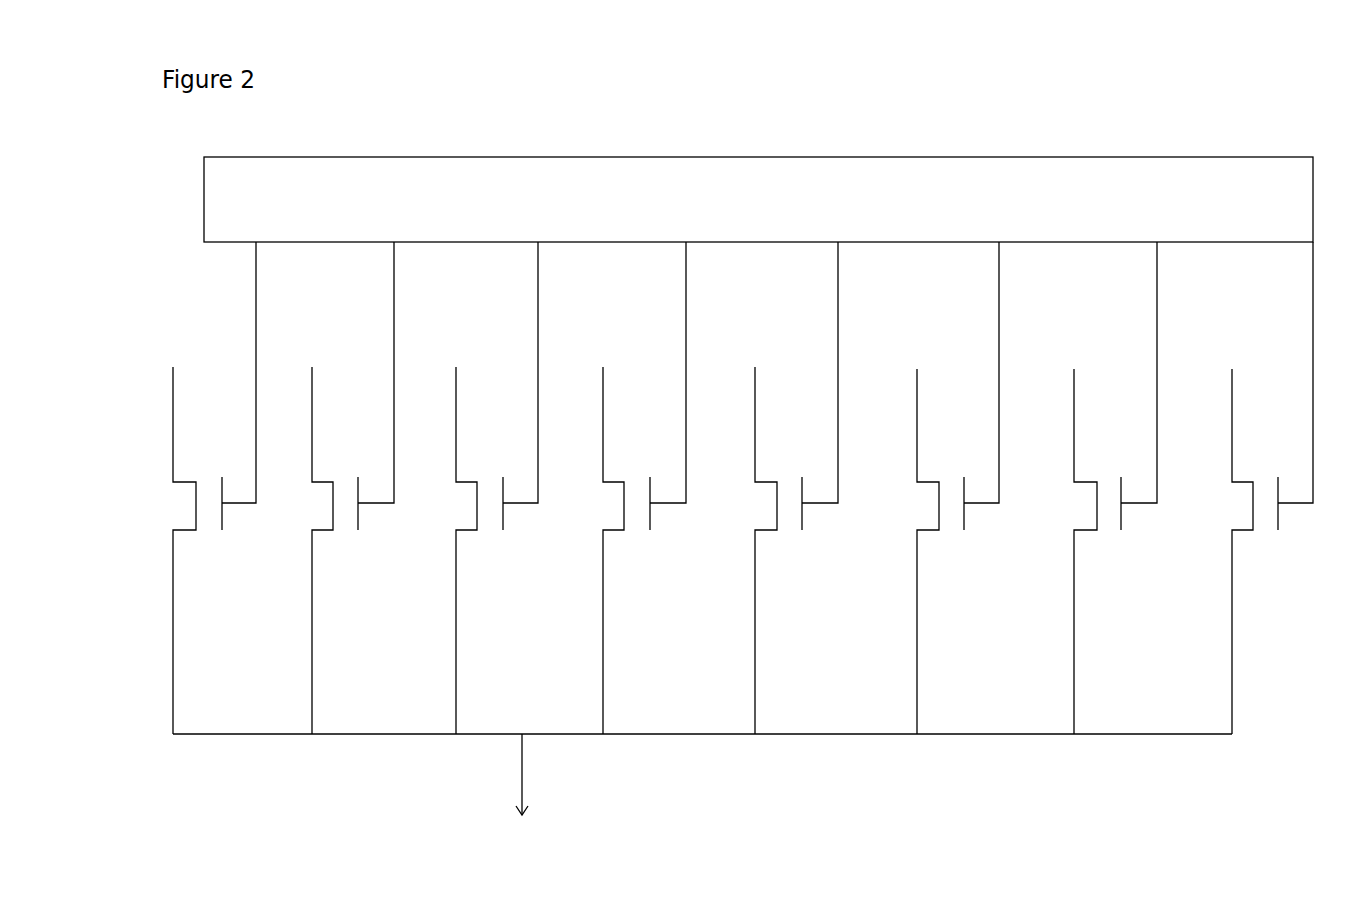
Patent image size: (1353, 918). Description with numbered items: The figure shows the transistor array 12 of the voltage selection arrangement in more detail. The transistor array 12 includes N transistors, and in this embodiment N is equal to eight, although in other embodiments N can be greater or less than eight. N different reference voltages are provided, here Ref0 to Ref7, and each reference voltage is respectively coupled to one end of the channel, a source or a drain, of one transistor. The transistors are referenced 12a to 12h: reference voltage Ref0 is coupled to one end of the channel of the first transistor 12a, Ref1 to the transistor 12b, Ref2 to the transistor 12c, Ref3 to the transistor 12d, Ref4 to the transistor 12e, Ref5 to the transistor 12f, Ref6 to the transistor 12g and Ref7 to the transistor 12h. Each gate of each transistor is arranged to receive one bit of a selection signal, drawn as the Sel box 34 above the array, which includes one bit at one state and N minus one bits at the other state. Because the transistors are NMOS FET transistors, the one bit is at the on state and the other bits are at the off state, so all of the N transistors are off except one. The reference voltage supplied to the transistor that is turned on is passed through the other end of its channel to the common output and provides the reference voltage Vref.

The transistor array 12 is at (173, 273).
The first transistor 12a is at (222, 530).
The transistor 12b is at (358, 530).
The transistor 12c is at (503, 530).
The transistor 12d is at (650, 530).
The transistor 12e is at (802, 530).
The transistor 12f is at (964, 530).
The transistor 12g is at (1121, 530).
The transistor 12h is at (1278, 530).
The select signal bus Sel 7:0 34 is at (758, 199).